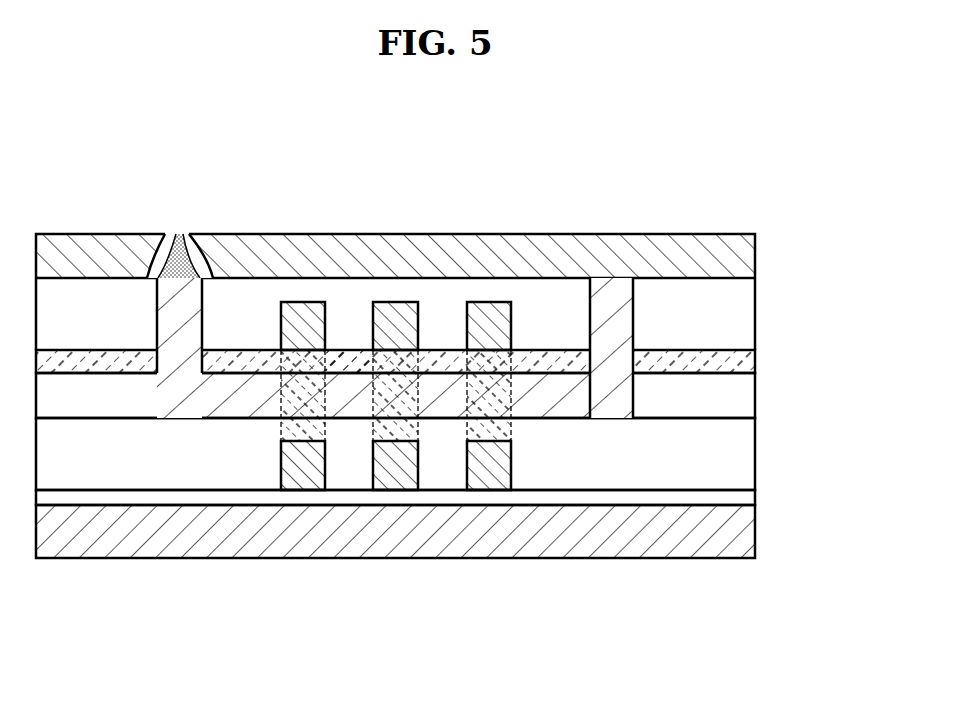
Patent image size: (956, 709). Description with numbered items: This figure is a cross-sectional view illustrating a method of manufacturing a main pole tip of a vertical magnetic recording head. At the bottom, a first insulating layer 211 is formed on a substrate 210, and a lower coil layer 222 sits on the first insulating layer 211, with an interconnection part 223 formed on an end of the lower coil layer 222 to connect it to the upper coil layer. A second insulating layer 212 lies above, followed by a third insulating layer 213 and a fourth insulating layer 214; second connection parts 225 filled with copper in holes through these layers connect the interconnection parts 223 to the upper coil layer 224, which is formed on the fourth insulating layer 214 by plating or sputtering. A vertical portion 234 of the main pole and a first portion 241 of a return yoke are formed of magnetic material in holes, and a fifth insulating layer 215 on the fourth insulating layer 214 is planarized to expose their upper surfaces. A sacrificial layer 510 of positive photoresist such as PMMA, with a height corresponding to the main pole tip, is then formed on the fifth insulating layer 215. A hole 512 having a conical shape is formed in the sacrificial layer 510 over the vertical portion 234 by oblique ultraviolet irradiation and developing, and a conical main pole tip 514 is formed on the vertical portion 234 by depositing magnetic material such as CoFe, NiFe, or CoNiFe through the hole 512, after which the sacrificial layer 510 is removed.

The sacrificial layer 510 is at (745, 259).
The hole 512 is at (163, 233).
The main pole tip 514 is at (186, 258).
The upper coil layer 224 is at (396, 317).
The fifth insulating layer 215 is at (740, 306).
The first portion of return yoke 241 is at (632, 332).
The fourth insulating layer 214 is at (745, 362).
The third insulating layer 213 is at (745, 397).
The second insulating layer 212 is at (752, 453).
The first insulating layer 211 is at (750, 498).
The substrate 210 is at (753, 535).
The vertical portion of main pole 234 is at (162, 320).
The interconnection part 223 is at (287, 430).
The lower coil layer 222 is at (303, 480).
The second connection part 225 is at (320, 358).